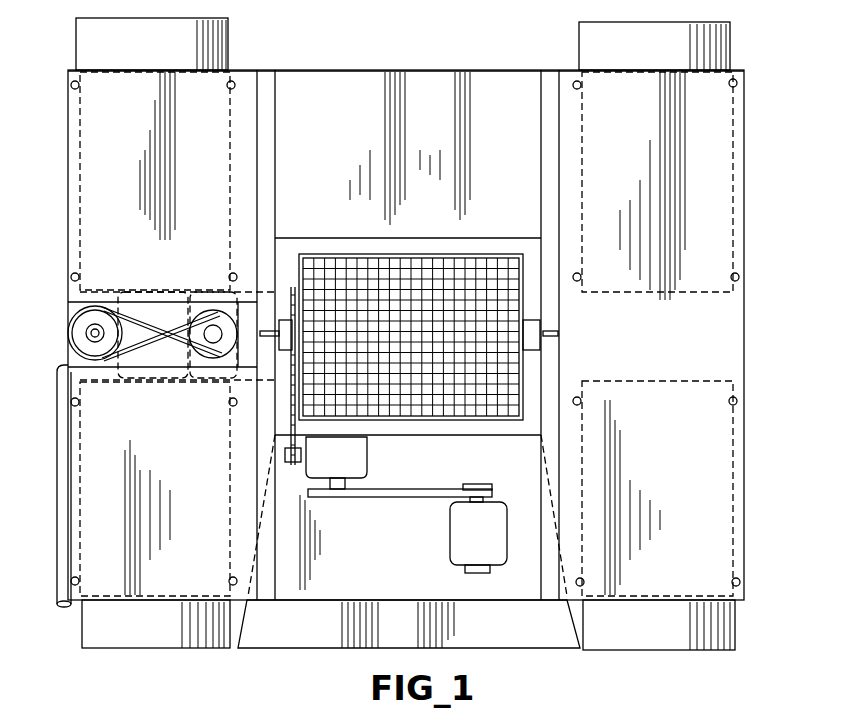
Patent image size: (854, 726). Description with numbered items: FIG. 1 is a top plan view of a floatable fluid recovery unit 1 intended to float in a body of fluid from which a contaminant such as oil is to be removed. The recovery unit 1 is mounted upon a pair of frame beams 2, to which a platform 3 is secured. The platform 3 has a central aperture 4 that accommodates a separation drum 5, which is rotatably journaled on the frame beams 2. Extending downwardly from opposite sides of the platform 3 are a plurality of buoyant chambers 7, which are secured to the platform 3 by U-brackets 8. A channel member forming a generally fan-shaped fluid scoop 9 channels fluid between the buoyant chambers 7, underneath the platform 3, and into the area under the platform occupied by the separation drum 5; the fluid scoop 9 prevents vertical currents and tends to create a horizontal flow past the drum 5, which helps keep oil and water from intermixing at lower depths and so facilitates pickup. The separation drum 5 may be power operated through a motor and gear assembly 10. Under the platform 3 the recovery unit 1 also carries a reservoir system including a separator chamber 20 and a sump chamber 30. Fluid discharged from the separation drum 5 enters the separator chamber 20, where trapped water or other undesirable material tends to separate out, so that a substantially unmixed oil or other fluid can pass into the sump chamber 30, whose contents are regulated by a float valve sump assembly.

The recovery unit 1 is at (752, 136).
The frame beams 2 is at (266, 175).
The platform 3 is at (481, 70).
The central aperture 4 is at (292, 257).
The separation drum 5 is at (432, 256).
The buoyant chambers 7 is at (82, 49).
The U-brackets 8 is at (72, 582).
The fluid scoop 9 is at (318, 630).
The motor and gear assembly 10 is at (450, 513).
The separator chamber 20 is at (208, 380).
The sump chamber 30 is at (142, 380).